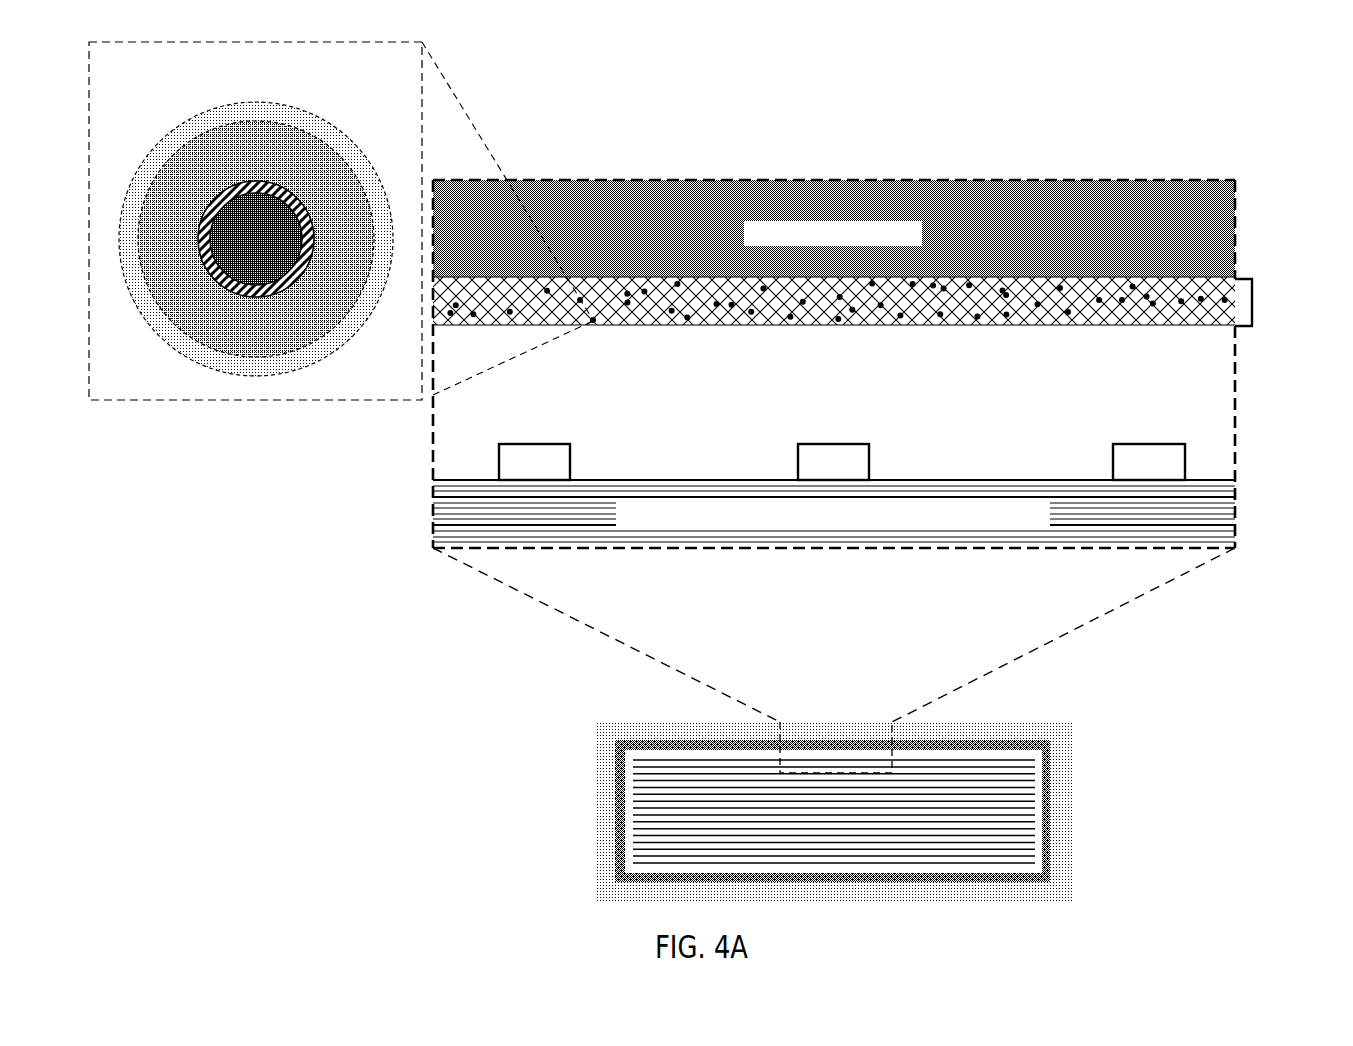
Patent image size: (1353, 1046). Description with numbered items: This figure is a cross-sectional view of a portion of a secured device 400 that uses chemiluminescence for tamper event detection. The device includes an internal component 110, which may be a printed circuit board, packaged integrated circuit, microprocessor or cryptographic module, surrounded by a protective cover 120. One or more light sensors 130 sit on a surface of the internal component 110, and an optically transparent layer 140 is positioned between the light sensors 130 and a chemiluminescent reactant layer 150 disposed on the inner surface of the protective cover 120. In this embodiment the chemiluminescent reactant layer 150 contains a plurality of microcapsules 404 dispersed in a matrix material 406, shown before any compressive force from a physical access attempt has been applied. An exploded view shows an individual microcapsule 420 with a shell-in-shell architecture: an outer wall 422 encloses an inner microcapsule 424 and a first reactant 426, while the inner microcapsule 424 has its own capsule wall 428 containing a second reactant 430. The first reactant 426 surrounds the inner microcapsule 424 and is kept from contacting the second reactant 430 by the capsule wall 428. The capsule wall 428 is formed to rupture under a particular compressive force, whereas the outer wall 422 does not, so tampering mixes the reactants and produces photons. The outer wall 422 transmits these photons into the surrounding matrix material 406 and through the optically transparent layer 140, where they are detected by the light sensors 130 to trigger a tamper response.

The internal component 110 is at (834, 514).
The protective cover 120 is at (834, 228).
The light sensor 130 is at (842, 462).
The optically transparent layer 140 is at (834, 364).
The chemiluminescent reactant layer 150 is at (1252, 302).
The secured device 400 is at (1117, 696).
The microcapsules 404 is at (594, 323).
The matrix material 406 is at (691, 323).
The microcapsule 420 is at (255, 221).
The outer wall 422 is at (153, 153).
The inner microcapsule 424 is at (257, 178).
The first reactant 426 is at (256, 239).
The capsule wall 428 is at (301, 199).
The second reactant 430 is at (256, 239).